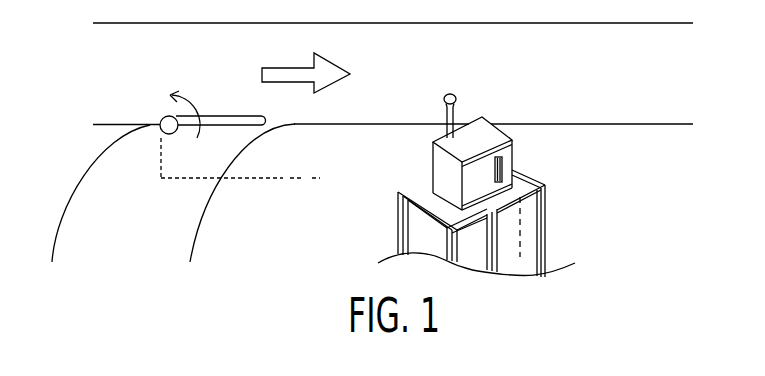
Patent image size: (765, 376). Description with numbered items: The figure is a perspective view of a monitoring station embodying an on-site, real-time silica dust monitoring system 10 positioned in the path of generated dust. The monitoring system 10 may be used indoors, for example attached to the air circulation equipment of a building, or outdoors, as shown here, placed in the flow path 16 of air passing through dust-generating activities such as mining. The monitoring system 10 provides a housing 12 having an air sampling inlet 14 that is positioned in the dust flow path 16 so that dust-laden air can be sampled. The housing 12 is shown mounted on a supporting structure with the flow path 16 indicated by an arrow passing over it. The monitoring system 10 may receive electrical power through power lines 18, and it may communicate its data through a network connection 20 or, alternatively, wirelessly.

The silica dust monitoring system 10 is at (522, 114).
The housing 12 is at (432, 174).
The air sampling inlet 14 is at (447, 113).
The flow path 16 is at (289, 67).
The power lines 18 is at (525, 172).
The network connection 20 is at (518, 161).